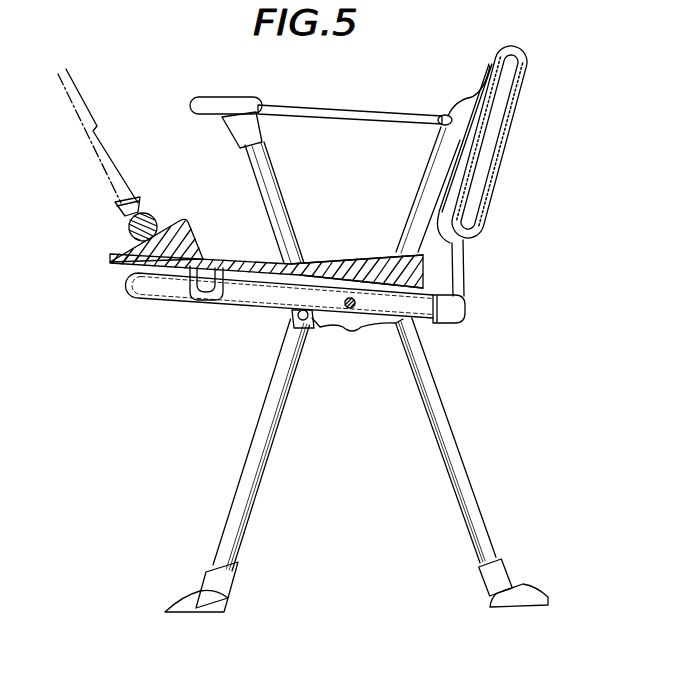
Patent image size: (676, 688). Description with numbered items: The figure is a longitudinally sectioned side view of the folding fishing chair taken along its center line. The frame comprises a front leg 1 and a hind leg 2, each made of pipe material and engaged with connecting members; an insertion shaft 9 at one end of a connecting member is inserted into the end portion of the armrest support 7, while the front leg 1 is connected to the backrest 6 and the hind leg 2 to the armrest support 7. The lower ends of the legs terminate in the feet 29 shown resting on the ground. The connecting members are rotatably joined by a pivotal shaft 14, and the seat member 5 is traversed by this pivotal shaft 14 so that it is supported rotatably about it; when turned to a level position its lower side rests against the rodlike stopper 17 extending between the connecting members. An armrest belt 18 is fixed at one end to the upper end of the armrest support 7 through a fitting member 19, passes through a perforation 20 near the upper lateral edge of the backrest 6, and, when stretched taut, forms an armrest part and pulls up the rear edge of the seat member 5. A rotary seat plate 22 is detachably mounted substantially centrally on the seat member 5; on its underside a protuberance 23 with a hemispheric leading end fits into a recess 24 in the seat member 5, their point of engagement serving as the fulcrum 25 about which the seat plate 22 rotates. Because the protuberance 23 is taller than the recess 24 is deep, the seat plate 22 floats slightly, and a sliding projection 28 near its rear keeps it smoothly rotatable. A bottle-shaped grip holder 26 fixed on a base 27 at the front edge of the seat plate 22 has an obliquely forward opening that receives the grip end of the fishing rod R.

The front leg 1 is at (250, 465).
The hind leg 2 is at (450, 457).
The seat member 5 is at (128, 291).
The backrest 6 is at (515, 97).
The armrest support 7 is at (262, 189).
The insertion shaft 9 is at (352, 323).
The pivotal shaft 14 is at (348, 299).
The rodlike stopper 17 is at (312, 330).
The armrest belt 18 is at (343, 110).
The fitting member 19 is at (208, 104).
The perforation 20 is at (441, 116).
The rotary seat plate 22 is at (243, 262).
The protuberance 23 is at (190, 284).
The recess 24 is at (230, 294).
The fulcrum of rotation 25 is at (196, 309).
The grip holder 26 is at (125, 232).
The base 27 is at (178, 226).
The sliding projection 28 is at (362, 285).
The foot 29 is at (205, 612).
The fishing rod R is at (118, 165).